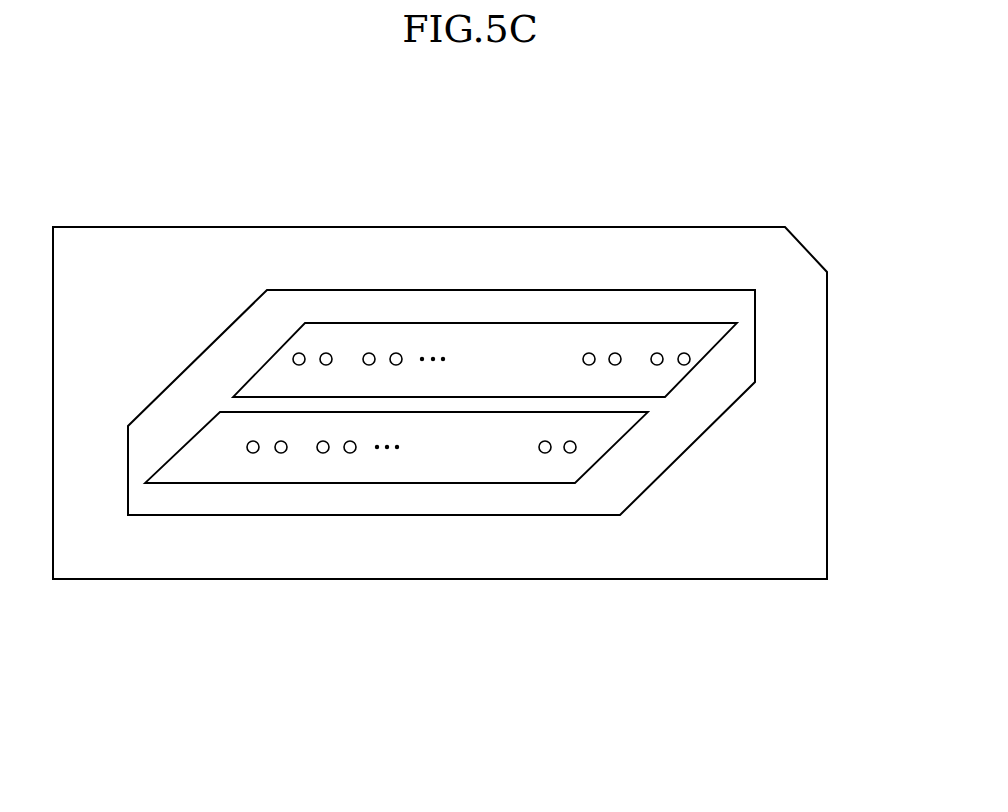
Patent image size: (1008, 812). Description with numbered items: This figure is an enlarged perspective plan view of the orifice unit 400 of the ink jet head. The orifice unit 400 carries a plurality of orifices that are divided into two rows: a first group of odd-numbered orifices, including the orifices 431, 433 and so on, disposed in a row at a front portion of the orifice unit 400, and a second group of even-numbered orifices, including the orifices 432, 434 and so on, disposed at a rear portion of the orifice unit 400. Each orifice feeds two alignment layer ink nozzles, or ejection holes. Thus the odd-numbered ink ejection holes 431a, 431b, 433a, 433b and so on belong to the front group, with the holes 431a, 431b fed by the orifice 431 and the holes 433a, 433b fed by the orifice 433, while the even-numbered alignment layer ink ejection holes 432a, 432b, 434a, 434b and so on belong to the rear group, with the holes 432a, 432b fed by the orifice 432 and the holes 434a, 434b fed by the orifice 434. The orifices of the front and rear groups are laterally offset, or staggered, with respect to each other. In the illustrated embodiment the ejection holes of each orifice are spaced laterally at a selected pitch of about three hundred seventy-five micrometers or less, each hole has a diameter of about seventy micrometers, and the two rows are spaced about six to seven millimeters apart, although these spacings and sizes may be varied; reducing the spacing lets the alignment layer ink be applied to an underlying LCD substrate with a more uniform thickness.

The orifice unit 400 is at (803, 218).
The first orifice 431 is at (294, 567).
The ink ejection hole 431a is at (253, 453).
The ink ejection hole 431b is at (281, 453).
The second orifice 432 is at (340, 242).
The ink ejection hole 432a is at (297, 352).
The ink ejection hole 432b is at (326, 352).
The third orifice 433 is at (415, 567).
The ink ejection hole 433a is at (323, 453).
The ink ejection hole 433b is at (350, 453).
The fourth orifice 434 is at (461, 242).
The ink ejection hole 434a is at (369, 352).
The ink ejection hole 434b is at (396, 352).